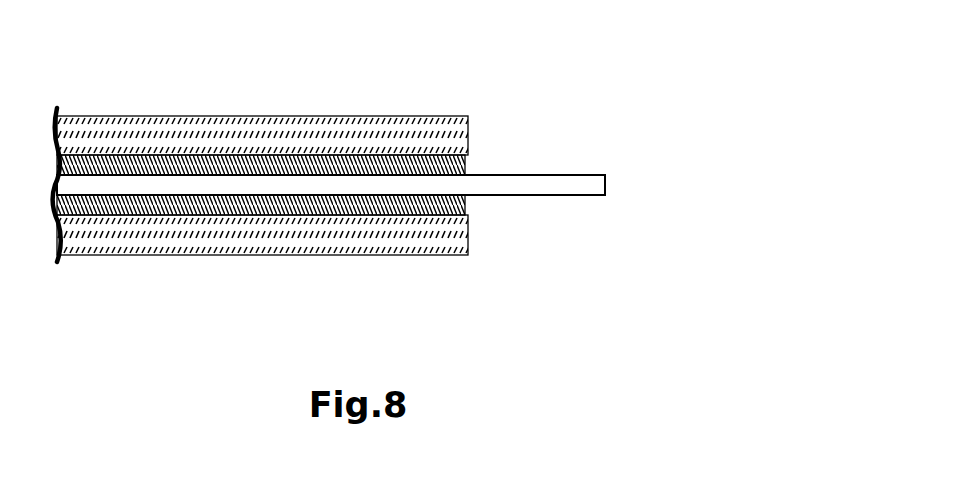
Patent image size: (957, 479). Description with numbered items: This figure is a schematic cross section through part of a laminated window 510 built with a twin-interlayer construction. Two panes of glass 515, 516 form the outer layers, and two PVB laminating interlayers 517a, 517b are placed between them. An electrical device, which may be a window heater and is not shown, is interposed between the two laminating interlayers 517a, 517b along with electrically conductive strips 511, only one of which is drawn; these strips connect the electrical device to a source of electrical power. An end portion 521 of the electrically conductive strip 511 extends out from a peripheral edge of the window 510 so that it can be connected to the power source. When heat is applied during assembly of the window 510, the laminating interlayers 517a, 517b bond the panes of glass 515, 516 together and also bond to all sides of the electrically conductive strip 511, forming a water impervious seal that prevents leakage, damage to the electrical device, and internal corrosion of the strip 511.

The window 510 is at (127, 108).
The electrically conductive strip 511 is at (310, 177).
The pane of glass 515 is at (297, 116).
The pane of glass 516 is at (230, 254).
The laminating interlayer 517a is at (467, 165).
The laminating interlayer 517b is at (465, 205).
The end portion 521 is at (555, 195).